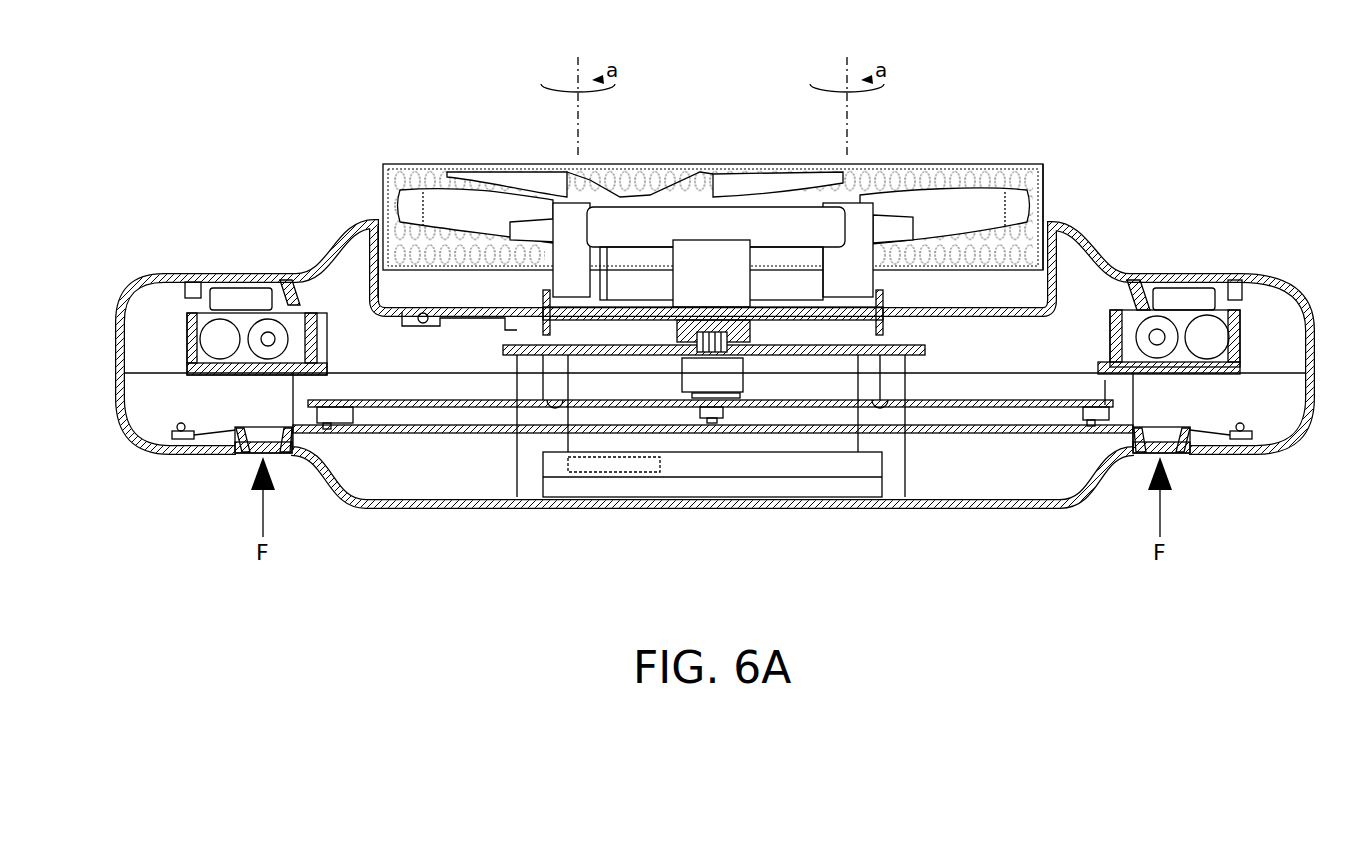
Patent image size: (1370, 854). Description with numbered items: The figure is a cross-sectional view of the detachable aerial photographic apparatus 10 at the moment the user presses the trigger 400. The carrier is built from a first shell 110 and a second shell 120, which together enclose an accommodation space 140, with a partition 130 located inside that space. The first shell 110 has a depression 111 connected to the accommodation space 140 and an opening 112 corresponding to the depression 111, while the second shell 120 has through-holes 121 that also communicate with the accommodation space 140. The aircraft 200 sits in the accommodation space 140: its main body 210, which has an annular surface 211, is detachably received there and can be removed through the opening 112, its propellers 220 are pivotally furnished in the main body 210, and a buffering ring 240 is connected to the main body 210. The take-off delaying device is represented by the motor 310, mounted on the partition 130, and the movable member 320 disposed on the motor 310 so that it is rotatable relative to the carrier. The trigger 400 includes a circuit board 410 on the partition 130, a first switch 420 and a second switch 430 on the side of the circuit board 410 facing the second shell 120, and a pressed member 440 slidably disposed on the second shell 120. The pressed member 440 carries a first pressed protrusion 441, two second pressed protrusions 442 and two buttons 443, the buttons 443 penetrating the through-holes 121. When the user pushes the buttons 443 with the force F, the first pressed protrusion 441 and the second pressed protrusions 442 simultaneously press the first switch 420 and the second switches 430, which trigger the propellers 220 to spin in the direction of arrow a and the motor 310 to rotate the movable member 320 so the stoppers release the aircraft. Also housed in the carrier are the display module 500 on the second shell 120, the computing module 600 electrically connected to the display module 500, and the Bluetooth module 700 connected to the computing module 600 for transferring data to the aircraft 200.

The detachable aerial photographic apparatus 10 is at (258, 81).
The first shell 110 is at (1267, 276).
The depression 111 is at (341, 305).
The opening 112 is at (376, 218).
The second shell 120 is at (1288, 440).
The through-holes 121 is at (297, 468).
The partition 130 is at (922, 350).
The accommodation space 140 is at (415, 287).
The aircraft 200 is at (931, 150).
The main body 210 is at (627, 205).
The annular surface 211 is at (566, 222).
The propellers 220 is at (765, 177).
The buffering ring 240 is at (1046, 176).
The motor 310 is at (728, 378).
The movable member 320 is at (711, 325).
The trigger 400 is at (449, 450).
The circuit board 410 is at (428, 400).
The first switch 420 is at (698, 413).
The second switch 430 is at (345, 413).
The pressed member 440 is at (1168, 415).
The first pressed protrusion 441 is at (714, 426).
The second pressed protrusions 442 is at (320, 421).
The buttons 443 is at (253, 455).
The display module 500 is at (789, 488).
The computing module 600 is at (850, 467).
The Bluetooth module 700 is at (606, 468).